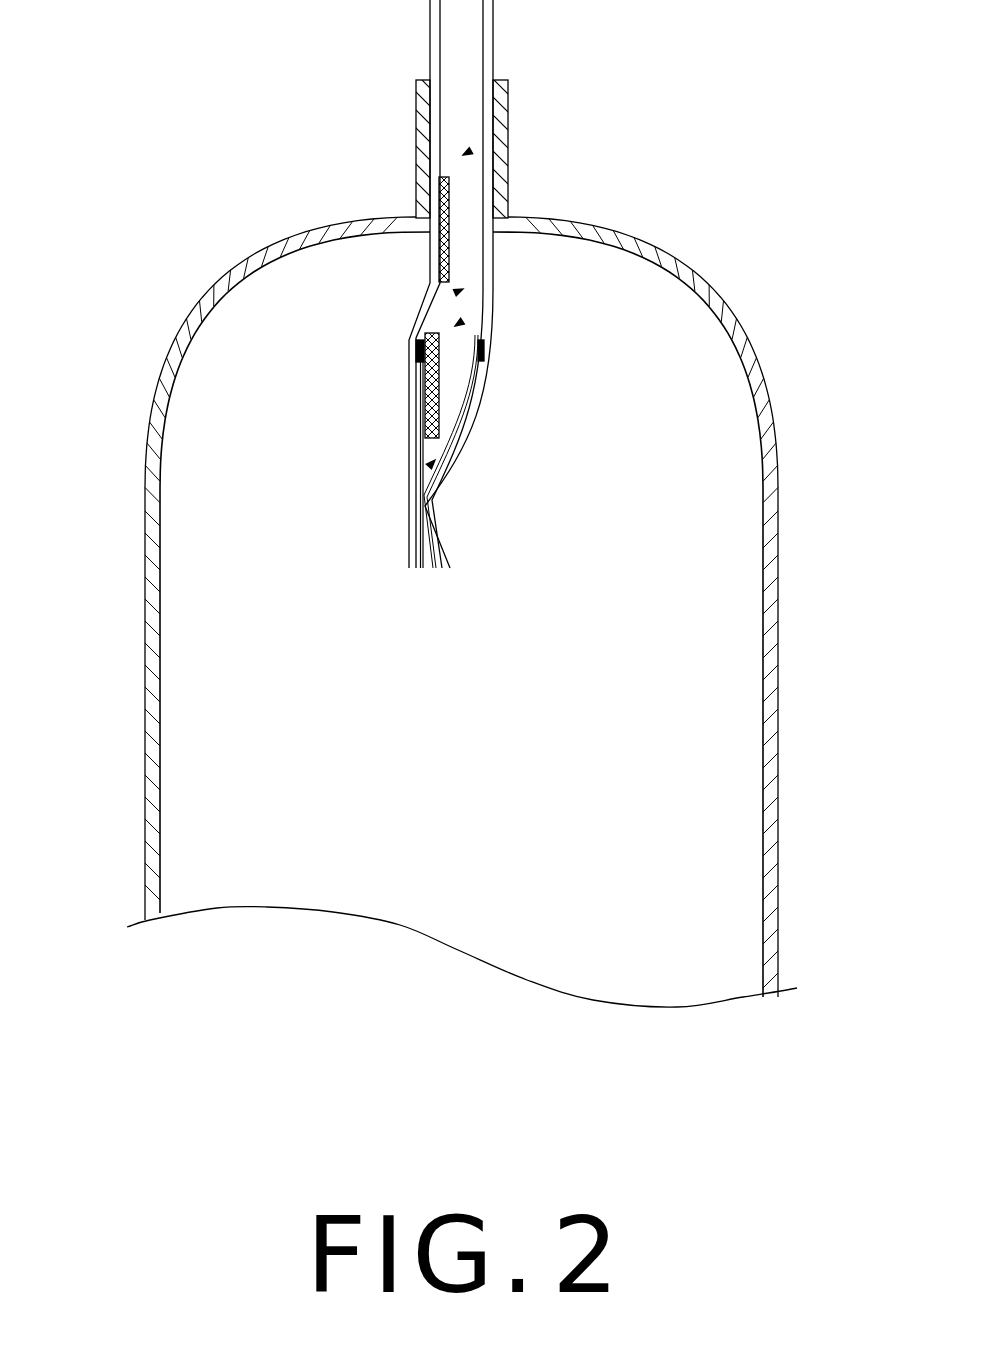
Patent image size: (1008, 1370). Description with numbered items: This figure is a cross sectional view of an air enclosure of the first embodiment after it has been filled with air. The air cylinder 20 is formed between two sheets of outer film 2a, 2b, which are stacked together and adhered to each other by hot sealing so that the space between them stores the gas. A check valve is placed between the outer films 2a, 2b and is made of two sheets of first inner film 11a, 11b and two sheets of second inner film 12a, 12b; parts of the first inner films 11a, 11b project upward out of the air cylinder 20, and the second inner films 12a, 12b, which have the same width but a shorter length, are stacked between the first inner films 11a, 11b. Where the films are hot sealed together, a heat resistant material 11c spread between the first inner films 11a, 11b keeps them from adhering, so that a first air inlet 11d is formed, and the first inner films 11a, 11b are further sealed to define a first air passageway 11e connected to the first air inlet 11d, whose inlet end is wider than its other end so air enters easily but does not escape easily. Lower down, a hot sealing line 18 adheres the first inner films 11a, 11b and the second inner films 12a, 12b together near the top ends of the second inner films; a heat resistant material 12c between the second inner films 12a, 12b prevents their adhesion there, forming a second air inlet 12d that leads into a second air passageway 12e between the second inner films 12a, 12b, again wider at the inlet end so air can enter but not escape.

The outer film 2a is at (152, 805).
The outer film 2b is at (778, 707).
The air cylinder 20 is at (735, 887).
The first inner film 11a is at (435, 30).
The first inner film 11b is at (490, 32).
The heat resistant material 11c is at (463, 202).
The first air inlet 11d is at (463, 153).
The first air passageway 11e is at (462, 289).
The second inner film 12a is at (419, 455).
The second inner film 12b is at (463, 443).
The heat resistant material 12c is at (425, 378).
The second air inlet 12d is at (455, 326).
The second air passageway 12e is at (435, 460).
The hot sealing line 18 is at (416, 350).